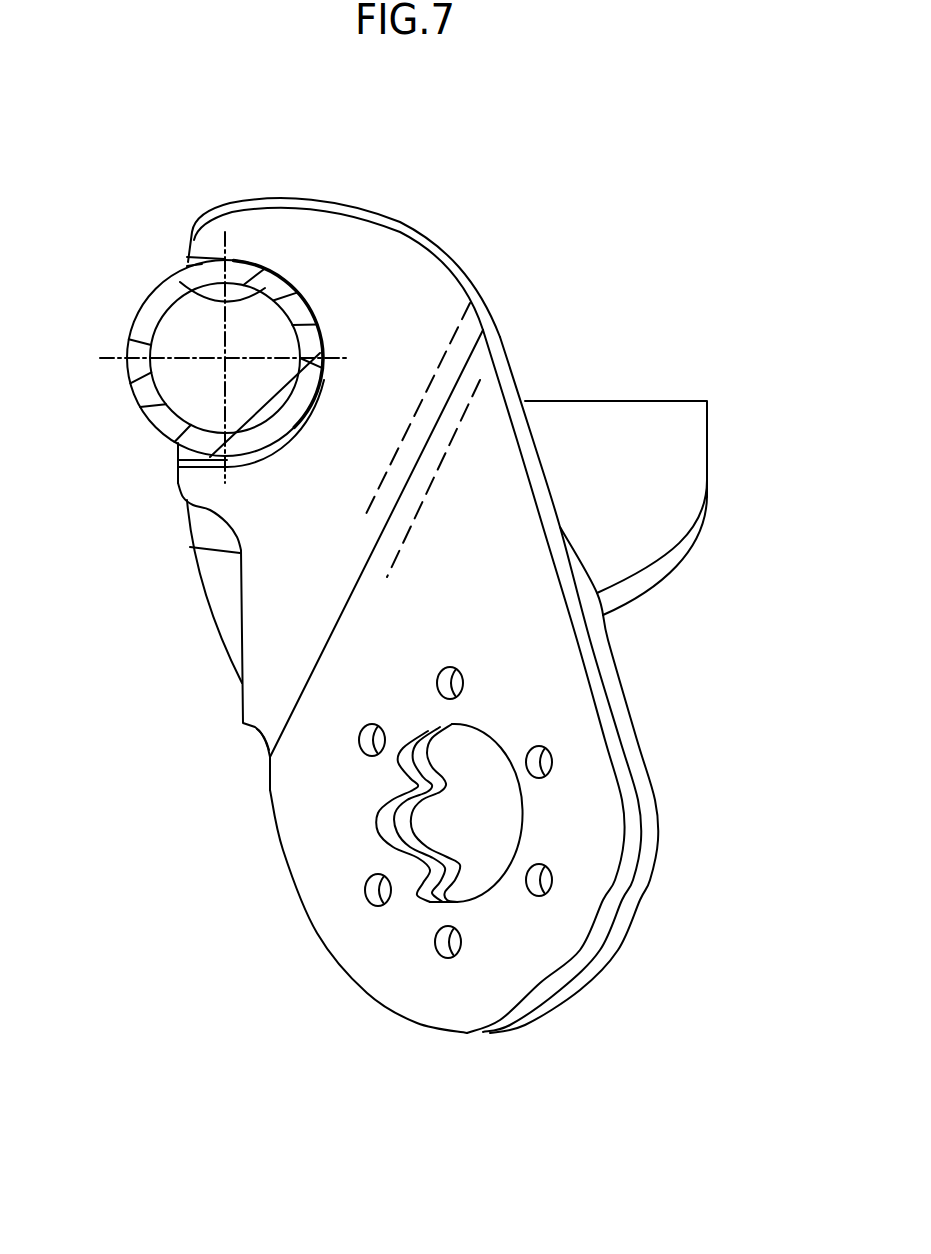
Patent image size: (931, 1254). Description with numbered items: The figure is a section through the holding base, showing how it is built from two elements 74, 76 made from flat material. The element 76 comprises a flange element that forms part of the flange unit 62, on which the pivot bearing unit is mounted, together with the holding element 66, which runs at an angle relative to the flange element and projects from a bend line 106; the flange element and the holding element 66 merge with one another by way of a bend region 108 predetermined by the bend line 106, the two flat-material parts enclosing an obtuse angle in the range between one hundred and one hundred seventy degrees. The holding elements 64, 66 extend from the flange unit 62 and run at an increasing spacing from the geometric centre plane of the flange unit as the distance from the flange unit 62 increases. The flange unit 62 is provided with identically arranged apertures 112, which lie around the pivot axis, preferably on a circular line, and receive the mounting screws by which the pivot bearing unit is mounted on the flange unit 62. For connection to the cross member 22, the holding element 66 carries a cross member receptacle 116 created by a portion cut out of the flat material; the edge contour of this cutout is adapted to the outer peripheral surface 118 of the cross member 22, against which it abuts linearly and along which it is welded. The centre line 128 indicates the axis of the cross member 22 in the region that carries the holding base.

The cross member 22 is at (150, 397).
The flange unit 62 is at (648, 813).
The holding element 64 is at (673, 449).
The holding element 66 is at (347, 252).
The element 74 is at (662, 858).
The element 76 is at (540, 943).
The bend line 106 is at (468, 380).
The bend region 108 is at (330, 643).
The apertures 112 is at (452, 672).
The cross member receptacle 116 is at (183, 282).
The outer peripheral surface 118 is at (318, 325).
The axis 128 is at (225, 358).